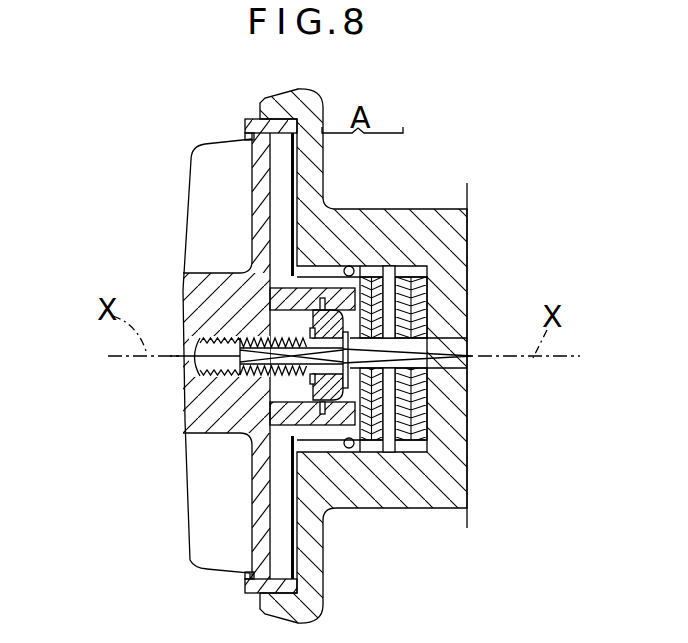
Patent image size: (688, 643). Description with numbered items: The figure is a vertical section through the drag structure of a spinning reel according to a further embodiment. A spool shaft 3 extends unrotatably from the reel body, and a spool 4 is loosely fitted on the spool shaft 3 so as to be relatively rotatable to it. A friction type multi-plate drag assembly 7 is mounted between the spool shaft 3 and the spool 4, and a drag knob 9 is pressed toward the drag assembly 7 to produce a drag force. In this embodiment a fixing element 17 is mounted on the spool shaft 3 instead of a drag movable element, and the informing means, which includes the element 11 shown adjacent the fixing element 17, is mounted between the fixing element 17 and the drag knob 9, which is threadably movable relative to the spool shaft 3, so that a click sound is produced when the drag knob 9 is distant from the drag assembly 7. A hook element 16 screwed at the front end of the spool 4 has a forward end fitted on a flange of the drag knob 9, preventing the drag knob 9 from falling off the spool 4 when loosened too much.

The spool shaft 3 is at (453, 386).
The spool 4 is at (440, 509).
The friction type multi-plate drag assembly 7 is at (427, 260).
The drag knob 9 is at (187, 224).
The nut 11 is at (313, 314).
The hook element 16 is at (250, 137).
The fixing element 17 is at (263, 277).